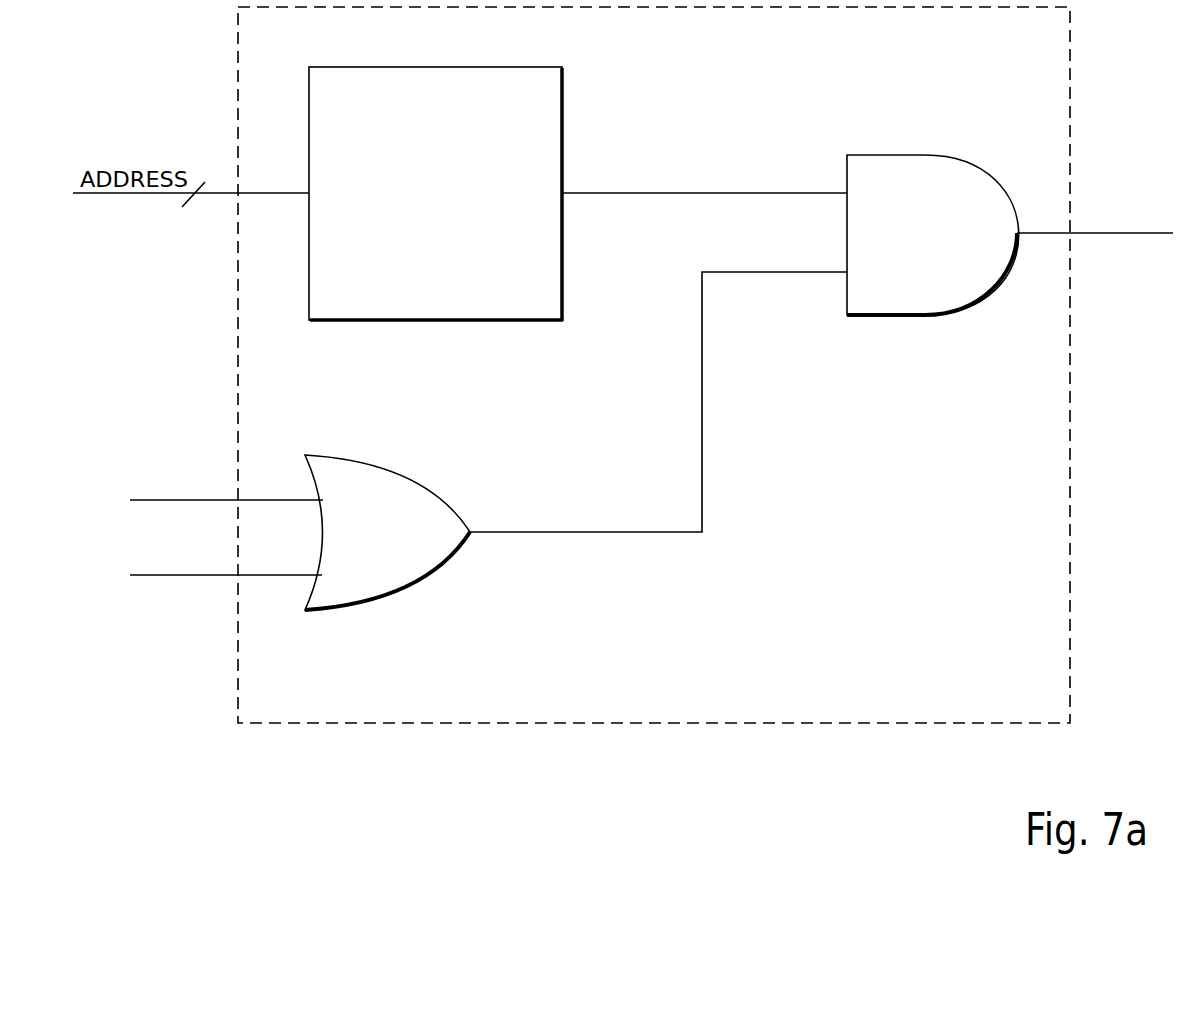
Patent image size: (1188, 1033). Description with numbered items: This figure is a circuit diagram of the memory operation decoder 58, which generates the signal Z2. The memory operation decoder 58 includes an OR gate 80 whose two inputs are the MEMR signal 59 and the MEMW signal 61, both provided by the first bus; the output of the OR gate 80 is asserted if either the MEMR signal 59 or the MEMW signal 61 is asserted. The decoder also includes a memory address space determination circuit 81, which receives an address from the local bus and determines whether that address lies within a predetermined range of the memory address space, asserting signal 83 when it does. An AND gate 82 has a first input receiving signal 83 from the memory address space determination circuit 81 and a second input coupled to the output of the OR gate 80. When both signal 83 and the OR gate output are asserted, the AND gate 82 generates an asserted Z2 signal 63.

The memory operation decoder 58 is at (1035, 45).
The memory address space determination circuit 81 is at (450, 271).
The signal 83 is at (704, 177).
The AND gate 82 is at (948, 246).
The Z2 signal 63 is at (1095, 219).
The OR gate 80 is at (404, 544).
The MEMR signal 59 is at (210, 494).
The MEMW signal 61 is at (212, 571).